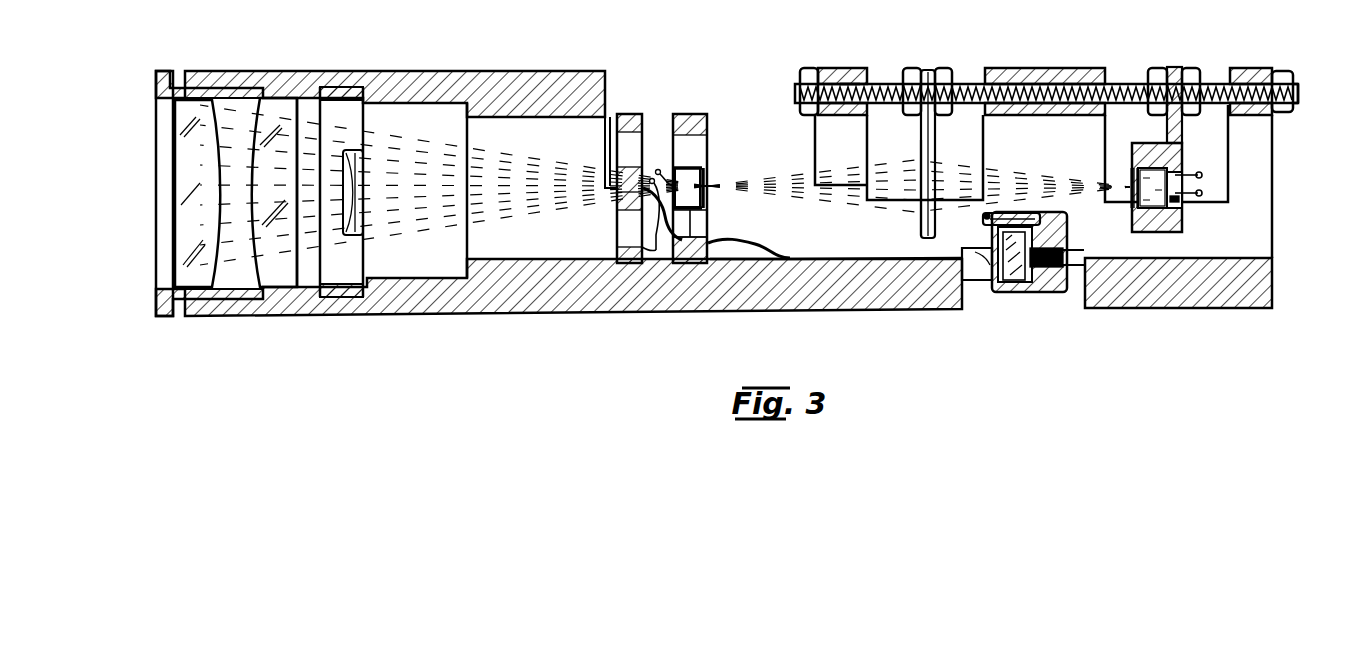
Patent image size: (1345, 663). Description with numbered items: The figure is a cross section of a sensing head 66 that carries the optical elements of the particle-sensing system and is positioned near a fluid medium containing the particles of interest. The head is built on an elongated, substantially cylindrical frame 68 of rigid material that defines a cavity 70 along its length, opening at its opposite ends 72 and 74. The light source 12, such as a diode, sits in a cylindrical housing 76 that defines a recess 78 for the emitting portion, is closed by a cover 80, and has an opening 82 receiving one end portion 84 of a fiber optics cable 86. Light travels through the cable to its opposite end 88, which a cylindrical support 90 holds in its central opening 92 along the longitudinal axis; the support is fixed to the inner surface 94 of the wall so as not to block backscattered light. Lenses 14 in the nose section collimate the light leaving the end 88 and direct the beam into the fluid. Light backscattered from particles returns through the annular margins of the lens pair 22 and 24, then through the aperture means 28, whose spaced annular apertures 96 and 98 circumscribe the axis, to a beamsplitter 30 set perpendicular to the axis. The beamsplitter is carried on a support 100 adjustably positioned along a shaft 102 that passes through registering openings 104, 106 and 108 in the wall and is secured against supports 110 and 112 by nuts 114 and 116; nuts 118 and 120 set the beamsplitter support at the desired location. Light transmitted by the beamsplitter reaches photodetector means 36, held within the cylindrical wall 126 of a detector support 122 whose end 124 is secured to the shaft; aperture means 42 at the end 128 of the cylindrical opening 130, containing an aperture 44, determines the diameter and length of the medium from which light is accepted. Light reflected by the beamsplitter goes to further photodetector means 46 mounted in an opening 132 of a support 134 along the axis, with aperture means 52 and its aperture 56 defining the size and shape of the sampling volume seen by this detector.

The light source 12 is at (1018, 268).
The lenses 14 is at (353, 190).
The lens 22 is at (192, 100).
The lens 24 is at (275, 105).
The aperture means 28 is at (706, 193).
The beamsplitter 30 is at (922, 148).
The photodetector means 36 is at (1178, 172).
The aperture means 42 is at (1128, 197).
The aperture 44 is at (1131, 187).
The further photodetector means 46 is at (682, 185).
The aperture means 52 is at (717, 180).
The aperture 56 is at (710, 190).
The sensing head 66 is at (1068, 67).
The frame 68 is at (425, 297).
The cavity 70 is at (494, 137).
The end 72 is at (163, 265).
The end 74 is at (1268, 220).
The cylindrical housing 76 is at (1058, 286).
The recess 78 is at (1014, 270).
The cover 80 is at (981, 272).
The opening 82 is at (983, 248).
The end portion 84 is at (884, 256).
The fiber optics cable 86 is at (739, 255).
The end 88 is at (658, 251).
The cylindrical support 90 is at (612, 184).
The opening 92 is at (616, 205).
The nose section 94 is at (343, 265).
The annular aperture 96 is at (625, 146).
The annular aperture 98 is at (706, 145).
The beamsplitter support 100 is at (936, 134).
The shaft 102 is at (882, 84).
The opening 104 is at (850, 88).
The opening 106 is at (1067, 68).
The opening 108 is at (1252, 80).
The support 110 is at (830, 68).
The support 112 is at (1272, 70).
The nut 114 is at (803, 68).
The nut 116 is at (1283, 107).
The nut 118 is at (909, 68).
The nut 120 is at (945, 68).
The detector support 122 is at (1174, 220).
The end 124 is at (1173, 68).
The cylindrical wall 126 is at (1176, 135).
The end 128 is at (1137, 228).
The cylindrical opening 130 is at (1203, 171).
The opening 132 is at (718, 216).
The support 134 is at (688, 238).